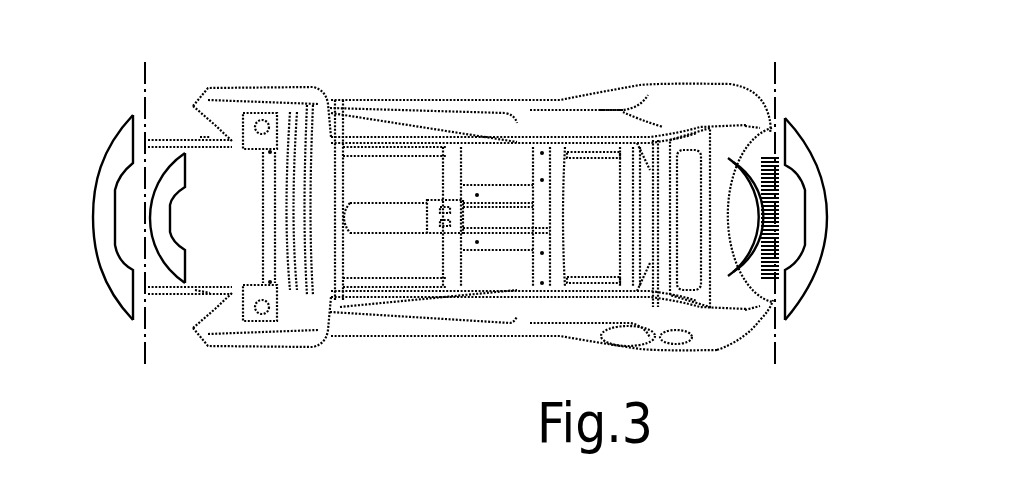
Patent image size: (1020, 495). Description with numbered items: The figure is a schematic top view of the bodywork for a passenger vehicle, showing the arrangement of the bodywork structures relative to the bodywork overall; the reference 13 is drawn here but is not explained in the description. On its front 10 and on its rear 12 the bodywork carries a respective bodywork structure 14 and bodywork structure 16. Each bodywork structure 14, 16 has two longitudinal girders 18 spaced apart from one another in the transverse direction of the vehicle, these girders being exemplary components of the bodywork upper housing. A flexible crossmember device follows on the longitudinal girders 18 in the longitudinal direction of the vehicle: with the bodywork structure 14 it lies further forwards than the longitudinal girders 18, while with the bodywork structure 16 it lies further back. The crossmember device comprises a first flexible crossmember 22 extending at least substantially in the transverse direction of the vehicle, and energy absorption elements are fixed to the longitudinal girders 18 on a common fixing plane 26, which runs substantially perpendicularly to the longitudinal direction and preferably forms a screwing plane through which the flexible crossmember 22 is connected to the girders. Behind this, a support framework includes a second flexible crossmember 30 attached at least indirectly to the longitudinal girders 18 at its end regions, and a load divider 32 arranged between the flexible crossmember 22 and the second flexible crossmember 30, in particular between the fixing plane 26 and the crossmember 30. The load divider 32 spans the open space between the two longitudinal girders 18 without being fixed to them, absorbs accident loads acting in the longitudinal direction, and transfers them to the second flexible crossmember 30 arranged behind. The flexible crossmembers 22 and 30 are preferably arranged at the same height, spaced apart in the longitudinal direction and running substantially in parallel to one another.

The front 10 is at (325, 58).
The rear 12 is at (694, 58).
The roof 13 is at (523, 92).
The bodywork structure 14 is at (114, 362).
The bodywork structure 16 is at (792, 366).
The longitudinal girders 18 is at (203, 137).
The flexible crossmember 22 is at (108, 210).
The fixing plane 26 is at (147, 87).
The second flexible crossmember 30 is at (169, 213).
The load divider 32 is at (777, 252).